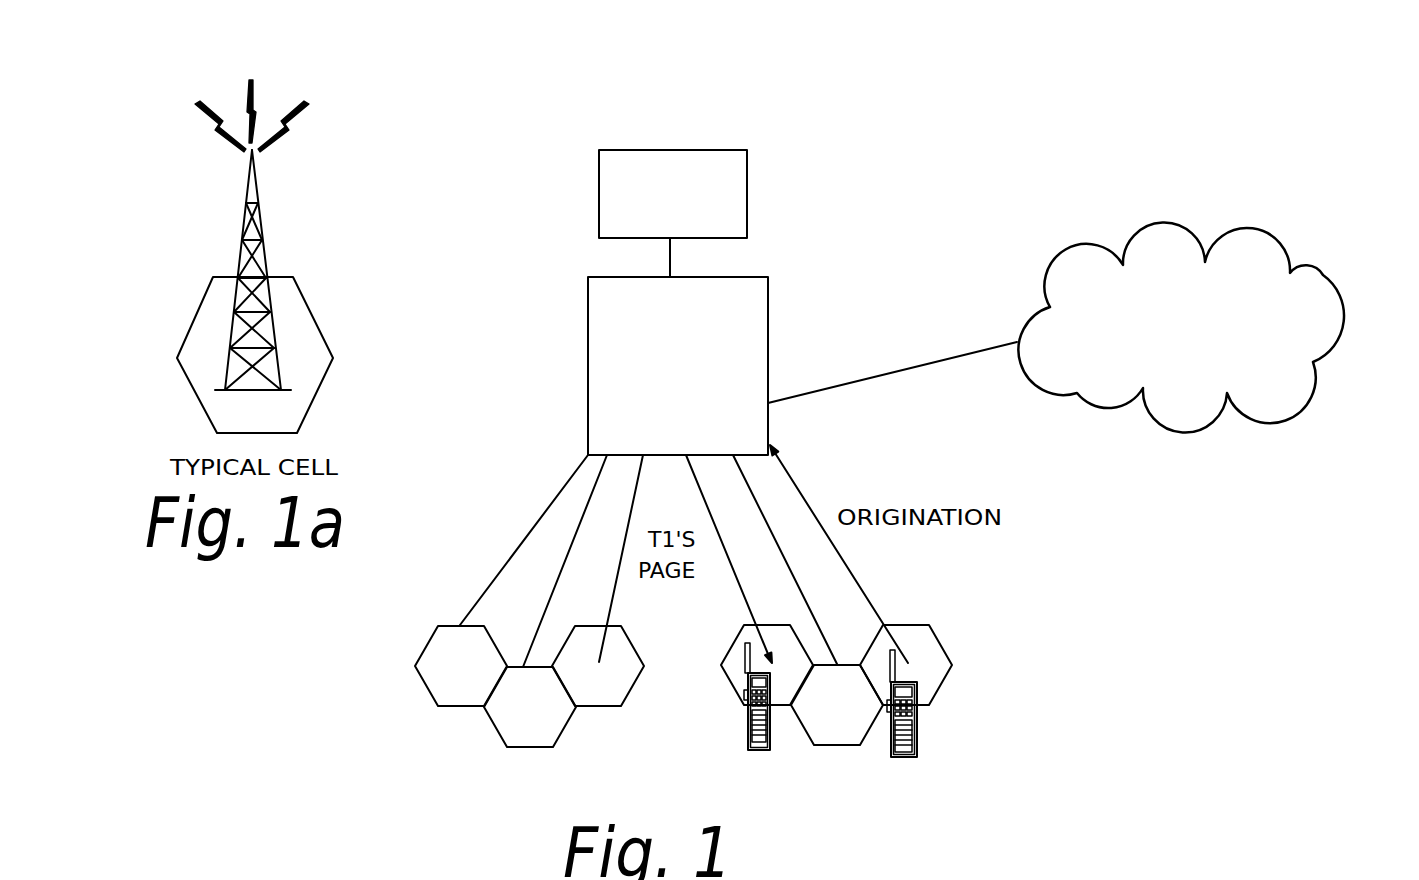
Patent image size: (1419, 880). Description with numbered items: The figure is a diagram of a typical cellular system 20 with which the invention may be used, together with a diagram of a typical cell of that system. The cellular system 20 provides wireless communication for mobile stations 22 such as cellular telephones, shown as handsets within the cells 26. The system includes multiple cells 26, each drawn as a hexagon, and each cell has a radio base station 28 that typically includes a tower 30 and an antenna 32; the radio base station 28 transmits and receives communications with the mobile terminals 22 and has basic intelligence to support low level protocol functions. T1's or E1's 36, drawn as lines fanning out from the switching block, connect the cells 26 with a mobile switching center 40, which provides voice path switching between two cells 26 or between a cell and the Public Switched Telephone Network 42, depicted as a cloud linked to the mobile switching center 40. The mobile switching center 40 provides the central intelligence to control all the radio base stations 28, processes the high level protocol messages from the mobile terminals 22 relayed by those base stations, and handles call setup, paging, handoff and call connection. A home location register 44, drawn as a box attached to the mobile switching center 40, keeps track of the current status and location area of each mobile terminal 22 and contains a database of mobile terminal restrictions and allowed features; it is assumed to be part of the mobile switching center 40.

In FIG. 1, the cellular system 20 is at (919, 236).
In FIG. 1, the mobile station 22 is at (747, 746).
In FIG. 1A, the cell 26 is at (317, 350).
In FIG. 1, the cell 26 is at (512, 722).
In FIG. 1A, the radio base station 28 is at (277, 235).
In FIG. 1A, the tower 30 is at (233, 307).
In FIG. 1A, the antenna 32 is at (256, 112).
In FIG. 1, the T1's or E1's 36 is at (633, 507).
In FIG. 1, the mobile switching center 40 is at (767, 280).
In FIG. 1, the Public Switched Telephone Network 42 is at (1323, 275).
In FIG. 1, the home location register 44 is at (747, 150).